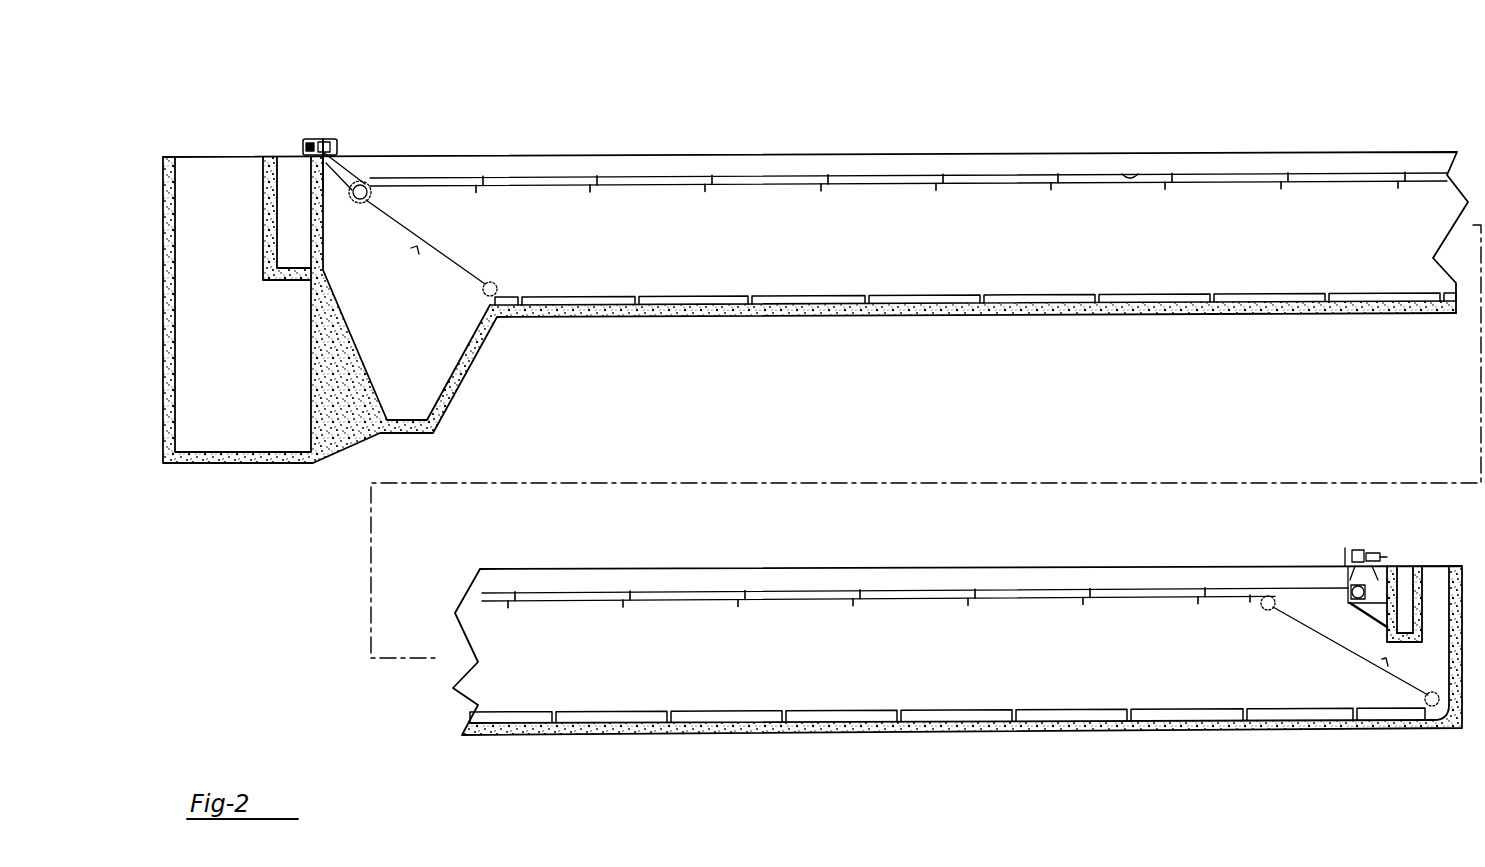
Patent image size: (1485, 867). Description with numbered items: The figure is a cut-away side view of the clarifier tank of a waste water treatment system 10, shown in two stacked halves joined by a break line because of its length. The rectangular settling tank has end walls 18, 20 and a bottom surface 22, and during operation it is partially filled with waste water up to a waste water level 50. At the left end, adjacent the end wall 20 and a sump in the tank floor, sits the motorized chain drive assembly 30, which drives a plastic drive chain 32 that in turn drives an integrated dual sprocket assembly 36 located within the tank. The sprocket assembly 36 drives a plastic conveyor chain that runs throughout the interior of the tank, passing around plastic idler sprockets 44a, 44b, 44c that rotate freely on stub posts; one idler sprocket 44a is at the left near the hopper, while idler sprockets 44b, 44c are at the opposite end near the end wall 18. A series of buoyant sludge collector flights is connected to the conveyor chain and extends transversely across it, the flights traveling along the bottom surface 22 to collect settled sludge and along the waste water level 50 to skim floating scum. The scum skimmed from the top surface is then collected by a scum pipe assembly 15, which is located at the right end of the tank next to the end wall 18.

The waste water treatment system 10 is at (587, 121).
The scum pipe assembly 15 is at (1376, 581).
The end wall 18 is at (1446, 653).
The end wall 20 is at (317, 233).
The bottom surface 22 is at (797, 296).
The chain drive assembly 30 is at (296, 141).
The drive chain 32 is at (347, 156).
The integrated dual sprocket assembly 36 is at (379, 207).
The idler sprocket 44a is at (489, 297).
The idler sprocket 44b is at (1268, 598).
The idler sprocket 44c is at (1428, 707).
The waste water level 50 is at (664, 178).